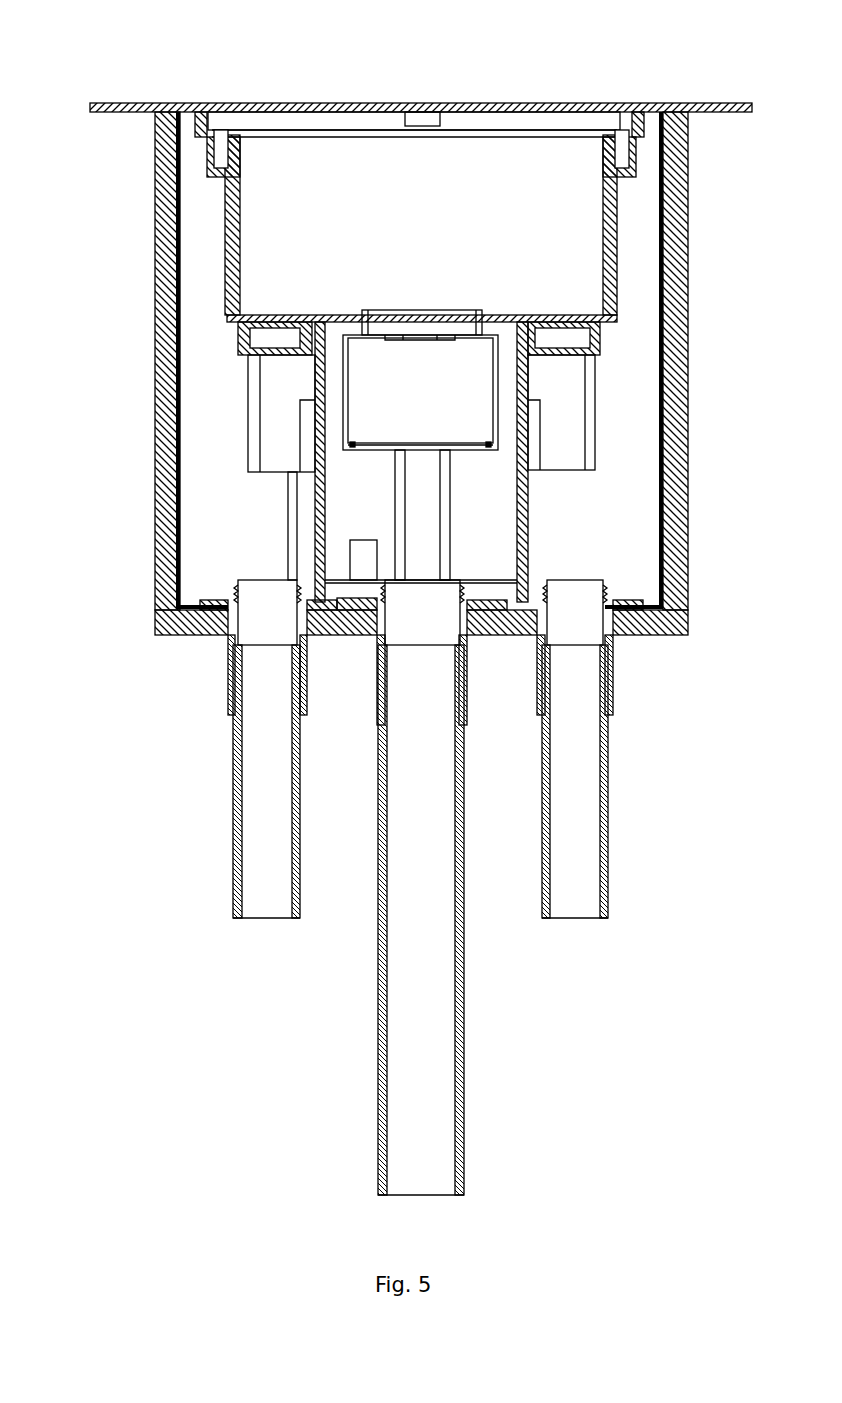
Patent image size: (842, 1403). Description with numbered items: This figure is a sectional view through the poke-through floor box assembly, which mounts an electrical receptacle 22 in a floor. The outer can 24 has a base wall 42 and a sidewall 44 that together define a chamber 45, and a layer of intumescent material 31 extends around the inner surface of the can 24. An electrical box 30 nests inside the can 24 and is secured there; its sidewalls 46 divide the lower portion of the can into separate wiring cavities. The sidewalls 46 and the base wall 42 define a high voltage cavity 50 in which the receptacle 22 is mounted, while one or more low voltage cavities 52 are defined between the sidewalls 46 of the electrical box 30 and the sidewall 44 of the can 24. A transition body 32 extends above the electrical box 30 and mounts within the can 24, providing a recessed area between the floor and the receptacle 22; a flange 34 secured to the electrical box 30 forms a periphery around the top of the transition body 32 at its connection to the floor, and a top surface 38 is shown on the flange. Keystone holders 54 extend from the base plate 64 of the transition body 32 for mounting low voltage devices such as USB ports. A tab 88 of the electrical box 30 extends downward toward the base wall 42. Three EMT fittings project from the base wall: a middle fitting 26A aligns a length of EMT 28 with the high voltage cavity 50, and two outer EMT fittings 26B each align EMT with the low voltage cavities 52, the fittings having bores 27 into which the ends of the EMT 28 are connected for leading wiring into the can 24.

The electrical receptacle 22 is at (420, 380).
The can 24 is at (165, 275).
The middle fitting 26A is at (467, 650).
The outer EMT fittings 26B is at (615, 645).
The bores 27 is at (582, 783).
The EMT 28 is at (464, 985).
The electrical box 30 is at (528, 492).
The layer of intumescent material 31 is at (658, 212).
The transition body 32 is at (228, 215).
The flange 34 is at (718, 103).
The cover plate top 38 is at (337, 103).
The base wall 42 is at (182, 636).
The sidewall 44 is at (657, 522).
The chamber 45 is at (258, 397).
The sidewalls 46 is at (530, 372).
The high voltage cavity 50 is at (422, 515).
The low voltage cavities 52 is at (415, 526).
The keystone holders 54 is at (565, 340).
The base plate 64 is at (338, 315).
The tab 88 is at (337, 636).